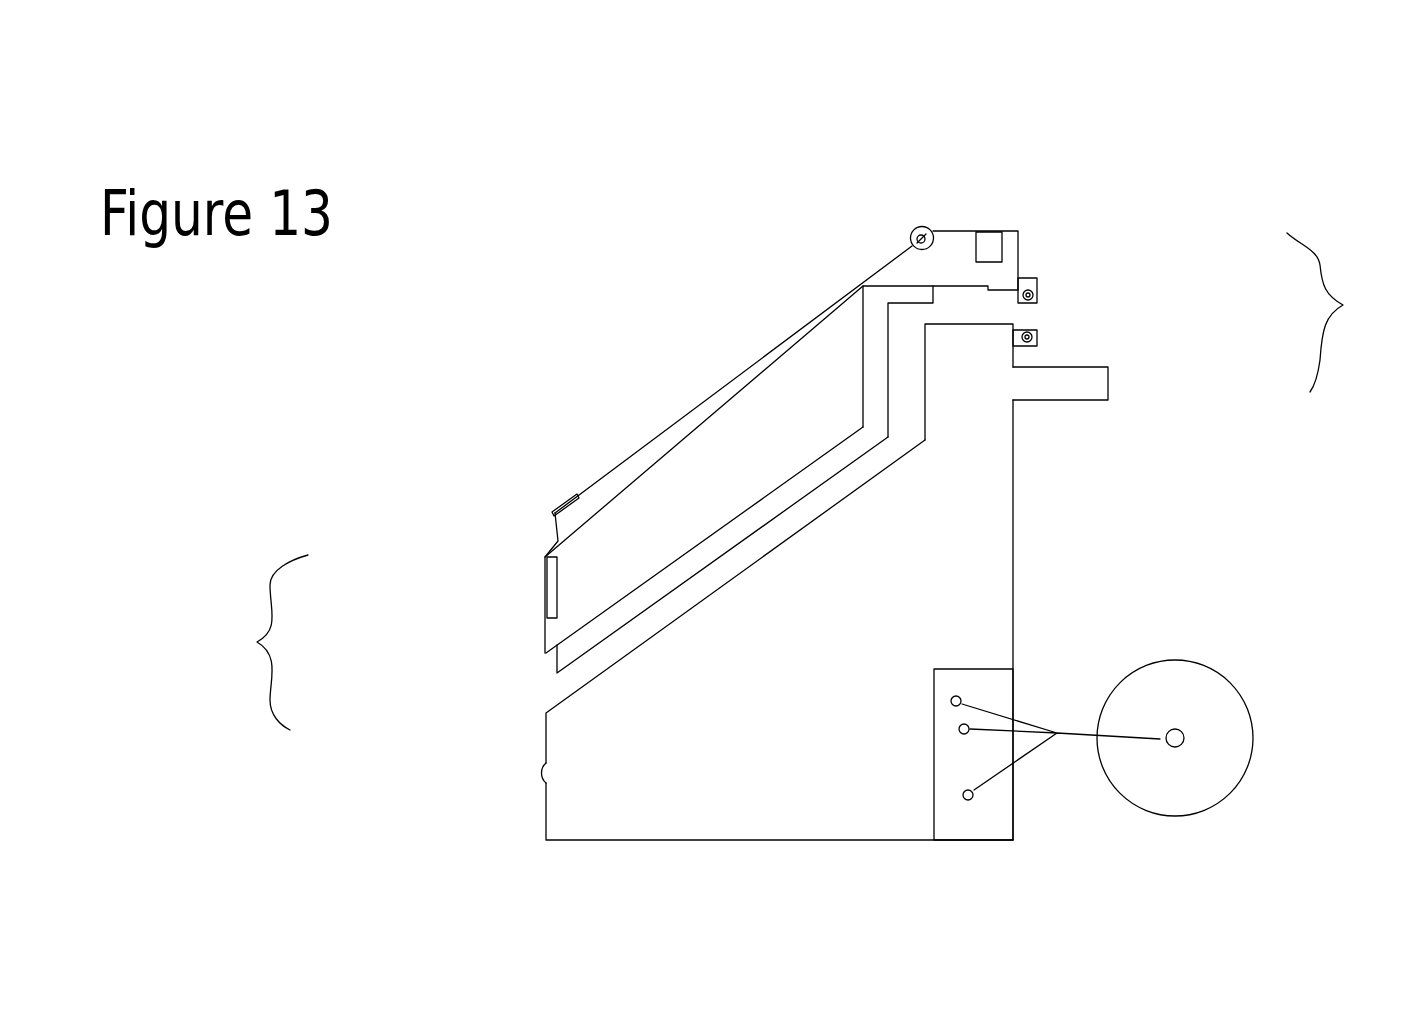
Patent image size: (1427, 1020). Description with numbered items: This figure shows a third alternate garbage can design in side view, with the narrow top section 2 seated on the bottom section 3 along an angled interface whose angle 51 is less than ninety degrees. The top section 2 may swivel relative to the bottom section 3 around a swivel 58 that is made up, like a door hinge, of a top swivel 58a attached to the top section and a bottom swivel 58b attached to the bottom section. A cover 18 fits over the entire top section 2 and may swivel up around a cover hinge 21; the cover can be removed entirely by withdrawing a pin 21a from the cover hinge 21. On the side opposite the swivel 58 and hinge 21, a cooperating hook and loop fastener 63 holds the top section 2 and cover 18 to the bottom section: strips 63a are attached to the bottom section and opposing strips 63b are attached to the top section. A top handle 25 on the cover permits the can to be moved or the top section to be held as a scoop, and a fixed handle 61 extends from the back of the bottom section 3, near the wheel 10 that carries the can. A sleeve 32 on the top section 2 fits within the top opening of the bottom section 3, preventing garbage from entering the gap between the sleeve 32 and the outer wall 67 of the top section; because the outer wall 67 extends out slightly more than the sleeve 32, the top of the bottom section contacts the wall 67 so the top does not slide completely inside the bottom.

The top section 2 is at (787, 407).
The bottom section 3 is at (965, 625).
The wheel 10 is at (1222, 742).
The cover 18 is at (790, 333).
The cover hinge 21 is at (915, 227).
The pin 21a is at (933, 232).
The top handle 25 is at (993, 250).
The sleeve 32 is at (779, 640).
The angle 51 is at (888, 453).
The swivel 58 is at (1356, 312).
The top swivel 58a is at (1045, 290).
The bottom swivel 58b is at (1037, 335).
The fixed handle 61 is at (1092, 390).
The hook and loop fastener 63 is at (240, 642).
The strips 63a is at (548, 770).
The opposing strips 63b is at (563, 503).
The outer wall 67 is at (732, 512).